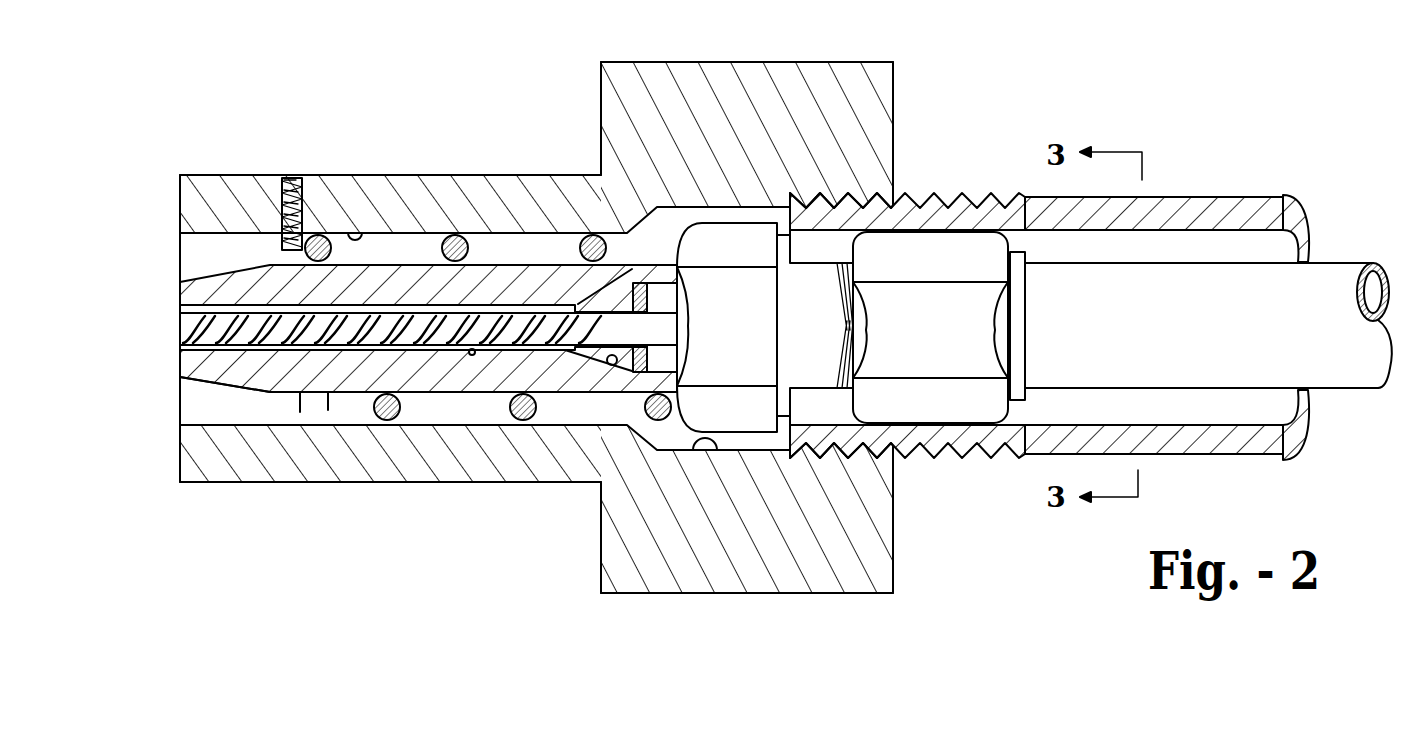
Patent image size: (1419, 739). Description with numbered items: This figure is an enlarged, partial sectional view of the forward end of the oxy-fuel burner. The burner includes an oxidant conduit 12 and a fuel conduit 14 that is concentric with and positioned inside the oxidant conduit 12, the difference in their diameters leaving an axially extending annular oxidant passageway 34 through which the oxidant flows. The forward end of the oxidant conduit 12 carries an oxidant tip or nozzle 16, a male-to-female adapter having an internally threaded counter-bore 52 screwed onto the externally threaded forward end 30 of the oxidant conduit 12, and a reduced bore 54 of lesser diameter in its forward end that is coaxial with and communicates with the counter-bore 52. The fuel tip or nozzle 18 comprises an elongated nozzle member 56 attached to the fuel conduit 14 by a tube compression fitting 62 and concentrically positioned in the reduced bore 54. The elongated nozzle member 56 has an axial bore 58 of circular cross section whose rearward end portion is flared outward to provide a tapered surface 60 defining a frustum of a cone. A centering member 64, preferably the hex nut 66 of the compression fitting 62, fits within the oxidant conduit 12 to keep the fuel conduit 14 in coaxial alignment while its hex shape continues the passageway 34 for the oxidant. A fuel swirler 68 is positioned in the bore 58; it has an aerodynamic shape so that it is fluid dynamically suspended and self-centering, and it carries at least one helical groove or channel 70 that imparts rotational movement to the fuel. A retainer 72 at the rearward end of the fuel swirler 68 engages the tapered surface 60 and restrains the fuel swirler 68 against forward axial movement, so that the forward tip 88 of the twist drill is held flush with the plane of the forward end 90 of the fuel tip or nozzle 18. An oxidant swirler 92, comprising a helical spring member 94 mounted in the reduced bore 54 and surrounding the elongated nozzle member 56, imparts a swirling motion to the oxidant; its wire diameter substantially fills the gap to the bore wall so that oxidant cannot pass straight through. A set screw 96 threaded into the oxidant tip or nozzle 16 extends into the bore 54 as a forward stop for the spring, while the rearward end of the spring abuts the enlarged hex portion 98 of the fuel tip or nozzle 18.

The oxidant conduit 12 is at (1185, 195).
The fuel conduit 14 is at (1320, 262).
The oxidant tip or nozzle 16 is at (600, 95).
The fuel tip or nozzle 18 is at (428, 277).
The externally threaded forward end 30 is at (853, 207).
The annular oxidant passageway 34 is at (1140, 405).
The internally threaded counter-bore 52 is at (700, 440).
The reduced bore 54 is at (345, 240).
The elongated nozzle member 56 is at (223, 288).
The axial bore 58 is at (476, 350).
The tapered surface 60 is at (607, 362).
The tube compression fitting 62 is at (893, 490).
The centering member 64 is at (935, 300).
The hex nut 66 is at (903, 380).
The fuel swirler 68 is at (590, 325).
The helical groove or channel 70 is at (180, 390).
The retainer 72 is at (640, 298).
The forward tip 88 is at (250, 325).
The forward end 90 is at (195, 375).
The oxidant swirler 92 is at (298, 412).
The helical spring member 94 is at (387, 397).
The set screw 96 is at (283, 177).
The enlarged hex portion 98 is at (723, 270).